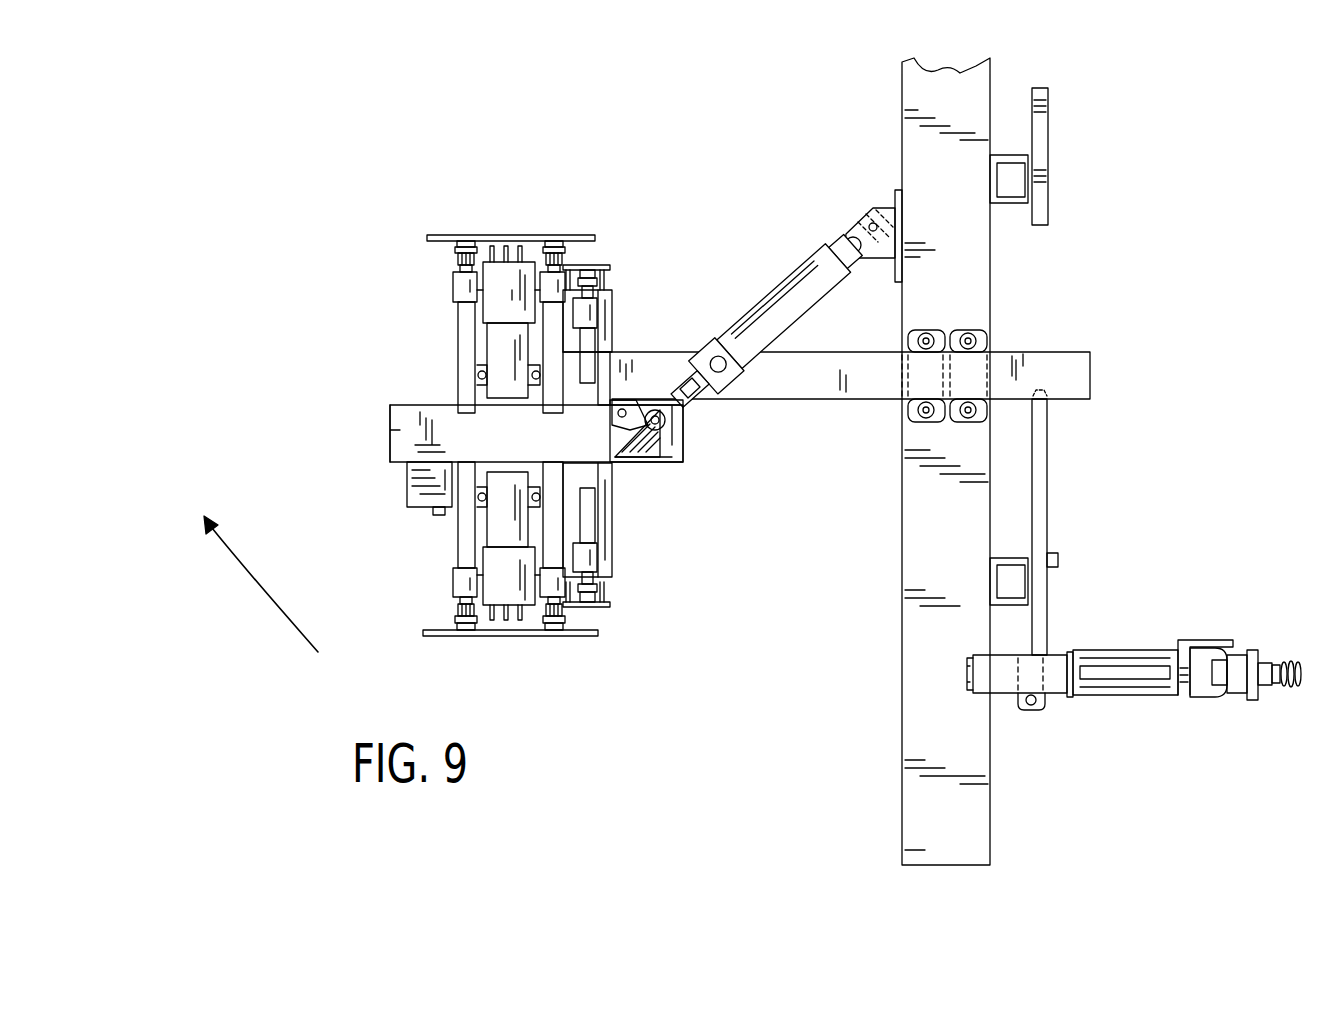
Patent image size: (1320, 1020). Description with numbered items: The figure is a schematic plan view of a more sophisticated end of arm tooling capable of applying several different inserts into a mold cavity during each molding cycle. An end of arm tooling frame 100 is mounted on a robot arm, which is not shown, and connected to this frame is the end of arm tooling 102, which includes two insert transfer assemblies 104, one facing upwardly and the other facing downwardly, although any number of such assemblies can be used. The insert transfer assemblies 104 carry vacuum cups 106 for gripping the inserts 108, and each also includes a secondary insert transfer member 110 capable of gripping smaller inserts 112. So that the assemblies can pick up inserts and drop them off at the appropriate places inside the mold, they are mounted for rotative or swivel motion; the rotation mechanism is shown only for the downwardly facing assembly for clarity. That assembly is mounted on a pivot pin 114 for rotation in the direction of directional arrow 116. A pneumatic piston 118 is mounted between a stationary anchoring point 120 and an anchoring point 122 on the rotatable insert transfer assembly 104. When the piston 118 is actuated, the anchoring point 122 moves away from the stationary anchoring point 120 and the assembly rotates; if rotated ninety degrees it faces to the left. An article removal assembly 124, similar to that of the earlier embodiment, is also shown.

The end of arm tooling frame 100 is at (995, 100).
The end of arm tooling 102 is at (228, 308).
The insert transfer assembly 104 is at (412, 311).
The vacuum cup 106 is at (432, 242).
The insert 108 is at (508, 236).
The secondary insert transfer member 110 is at (613, 313).
The smaller insert 112 is at (598, 263).
The pivot pin 114 is at (623, 425).
The directional arrow 116 is at (272, 620).
The pneumatic piston 118 is at (822, 318).
The stationary anchoring point 120 is at (855, 224).
The anchoring point 122 is at (655, 432).
The article removal assembly 124 is at (1112, 695).